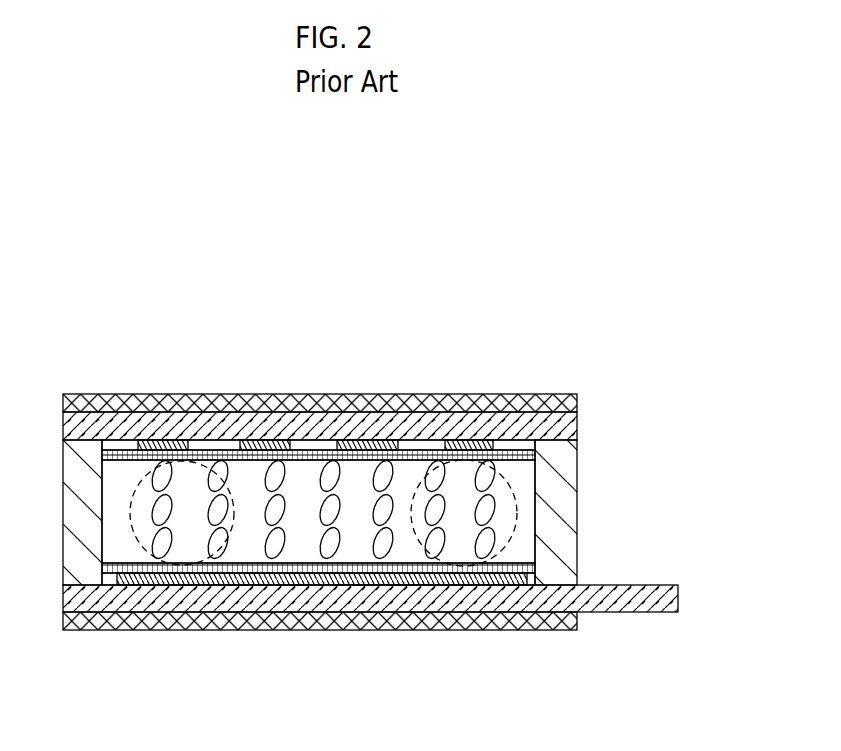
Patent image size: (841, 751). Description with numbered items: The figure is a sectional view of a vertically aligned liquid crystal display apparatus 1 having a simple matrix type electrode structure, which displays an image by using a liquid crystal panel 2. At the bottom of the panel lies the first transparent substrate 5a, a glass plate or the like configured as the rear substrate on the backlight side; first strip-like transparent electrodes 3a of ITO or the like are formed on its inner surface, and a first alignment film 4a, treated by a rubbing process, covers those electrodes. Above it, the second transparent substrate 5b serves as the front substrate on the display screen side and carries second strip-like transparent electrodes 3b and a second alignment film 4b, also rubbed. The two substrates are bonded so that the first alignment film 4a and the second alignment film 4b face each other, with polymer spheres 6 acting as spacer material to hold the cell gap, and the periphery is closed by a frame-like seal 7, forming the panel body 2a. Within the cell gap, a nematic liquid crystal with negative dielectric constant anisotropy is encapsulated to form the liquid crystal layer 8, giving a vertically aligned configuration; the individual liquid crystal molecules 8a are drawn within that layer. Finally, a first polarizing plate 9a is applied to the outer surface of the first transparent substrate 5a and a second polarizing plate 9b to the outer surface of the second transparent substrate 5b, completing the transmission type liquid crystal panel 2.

The vertically aligned liquid crystal display apparatus 1 is at (362, 173).
The liquid crystal panel 2 is at (249, 362).
The panel body 2a is at (53, 412).
The first strip-like transparent electrodes 3a is at (580, 568).
The second strip-like transparent electrodes 3b is at (574, 440).
The first alignment film 4a is at (535, 565).
The second alignment film 4b is at (540, 457).
The first transparent substrate 5a is at (678, 585).
The second transparent substrate 5b is at (574, 412).
The polymer spheres 6 is at (402, 440).
The seal 7 is at (560, 492).
The liquid crystal layer 8 is at (527, 520).
The liquid crystal molecule 8a is at (324, 462).
The first polarizing plate 9a is at (535, 627).
The second polarizing plate 9b is at (510, 393).